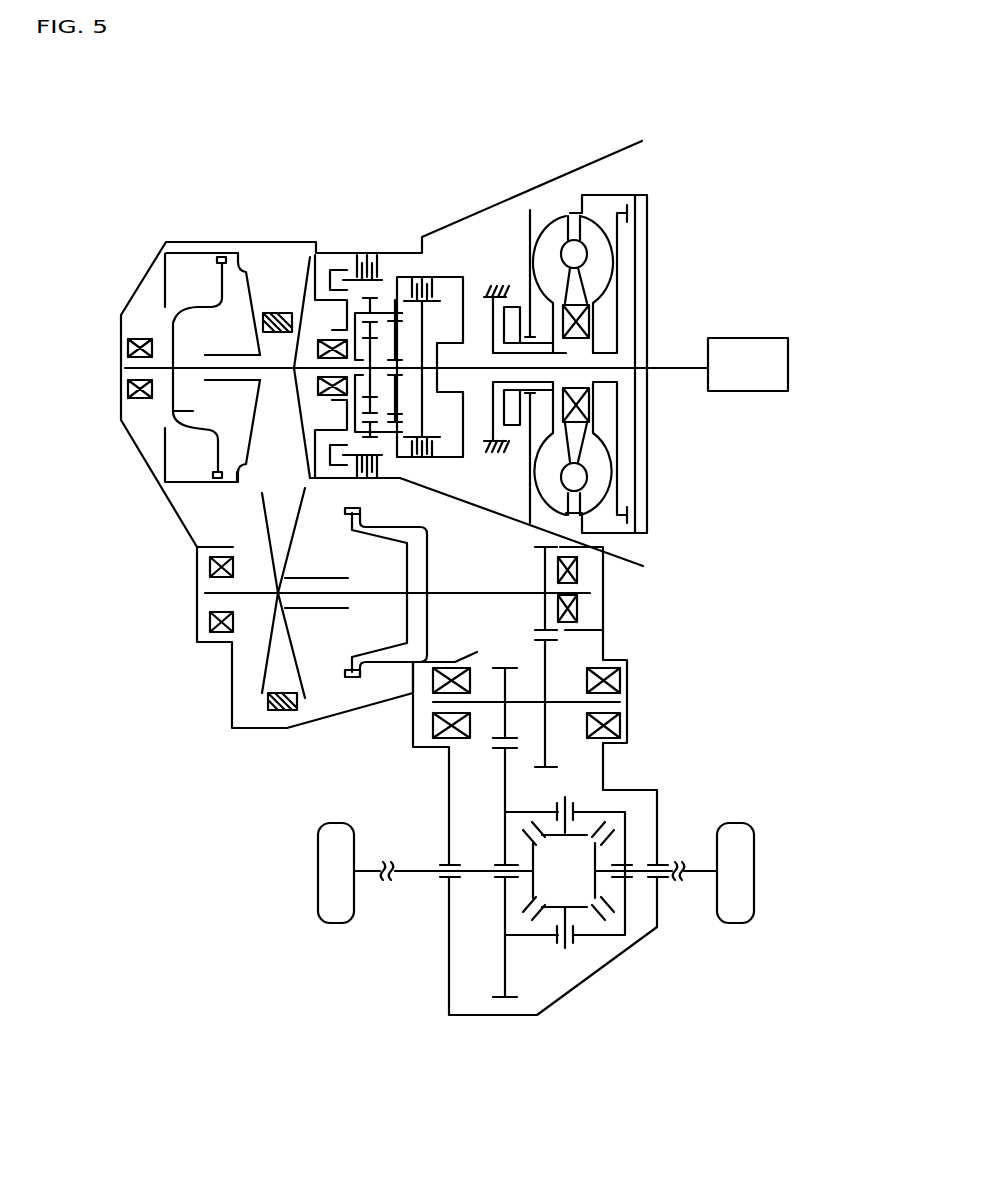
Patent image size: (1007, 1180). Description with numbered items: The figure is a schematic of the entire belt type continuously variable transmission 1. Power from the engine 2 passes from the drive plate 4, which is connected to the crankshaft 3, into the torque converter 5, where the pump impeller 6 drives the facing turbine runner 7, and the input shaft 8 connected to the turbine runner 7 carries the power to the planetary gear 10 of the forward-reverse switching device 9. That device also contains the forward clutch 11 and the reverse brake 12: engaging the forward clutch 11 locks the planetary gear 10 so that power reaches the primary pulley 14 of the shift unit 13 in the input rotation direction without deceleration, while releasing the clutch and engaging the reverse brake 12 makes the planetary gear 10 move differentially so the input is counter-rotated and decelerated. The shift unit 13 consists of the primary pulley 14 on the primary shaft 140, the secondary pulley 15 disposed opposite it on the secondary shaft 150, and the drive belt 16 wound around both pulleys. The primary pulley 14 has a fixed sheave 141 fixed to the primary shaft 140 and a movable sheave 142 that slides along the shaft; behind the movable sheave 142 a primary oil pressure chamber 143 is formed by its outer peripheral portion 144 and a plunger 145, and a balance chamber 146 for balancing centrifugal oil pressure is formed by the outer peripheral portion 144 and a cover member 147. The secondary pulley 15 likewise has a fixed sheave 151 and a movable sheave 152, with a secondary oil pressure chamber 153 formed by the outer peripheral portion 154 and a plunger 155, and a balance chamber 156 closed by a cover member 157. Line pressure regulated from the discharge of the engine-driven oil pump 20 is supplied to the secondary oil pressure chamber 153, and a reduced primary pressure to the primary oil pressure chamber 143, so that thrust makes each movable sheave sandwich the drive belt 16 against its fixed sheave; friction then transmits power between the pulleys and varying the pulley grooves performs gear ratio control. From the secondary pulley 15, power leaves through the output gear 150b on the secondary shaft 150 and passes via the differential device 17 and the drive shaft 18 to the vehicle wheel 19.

The belt type continuously variable transmission 1 is at (206, 150).
The engine 2 is at (783, 350).
The crankshaft 3 is at (682, 370).
The drive plate 4 is at (650, 455).
The torque converter 5 is at (611, 310).
The pump impeller 6 is at (552, 230).
The turbine runner 7 is at (600, 263).
The input shaft 8 is at (482, 373).
The forward-reverse switching device 9 is at (430, 468).
The planetary gear 10 is at (383, 446).
The forward clutch 11 is at (410, 268).
The reverse brake 12 is at (357, 246).
The shift unit 13 is at (214, 496).
The primary pulley 14 is at (176, 316).
The secondary pulley 15 is at (317, 590).
The drive belt 16 is at (285, 712).
The differential device 17 is at (597, 952).
The drive shaft 18 is at (410, 876).
The vehicle wheel 19 is at (336, 924).
The oil pump 20 is at (517, 427).
The primary shaft 140 is at (137, 367).
The fixed sheave 141 is at (305, 272).
The movable sheave 142 is at (247, 268).
The primary oil pressure chamber 143 is at (190, 410).
The outer peripheral portion 144 is at (192, 252).
The plunger 145 is at (197, 306).
The balance chamber 146 is at (188, 278).
The cover member 147 is at (165, 450).
The secondary shaft 150 is at (205, 593).
The output gear 150b is at (540, 547).
The fixed sheave 151 is at (190, 537).
The movable sheave 152 is at (262, 493).
The secondary oil pressure chamber 153 is at (395, 578).
The outer peripheral portion 154 is at (320, 700).
The plunger 155 is at (390, 650).
The balance chamber 156 is at (412, 607).
The cover member 157 is at (427, 637).